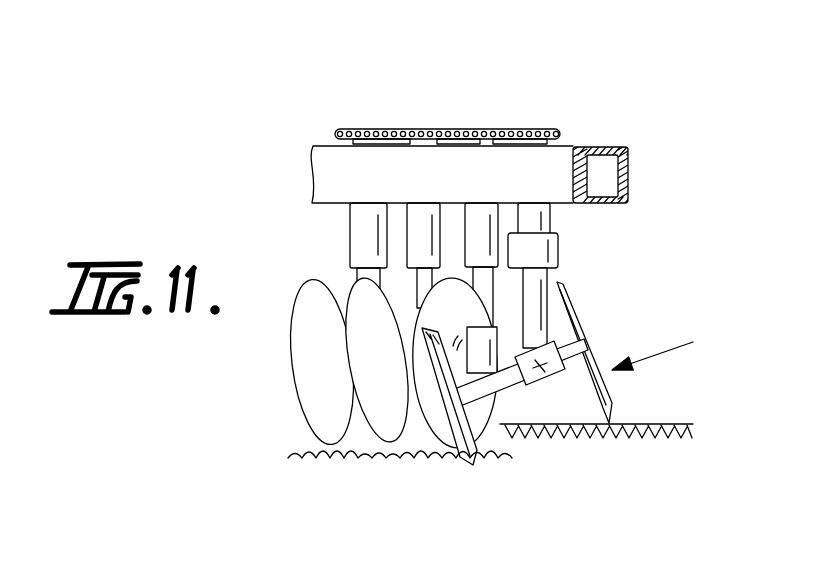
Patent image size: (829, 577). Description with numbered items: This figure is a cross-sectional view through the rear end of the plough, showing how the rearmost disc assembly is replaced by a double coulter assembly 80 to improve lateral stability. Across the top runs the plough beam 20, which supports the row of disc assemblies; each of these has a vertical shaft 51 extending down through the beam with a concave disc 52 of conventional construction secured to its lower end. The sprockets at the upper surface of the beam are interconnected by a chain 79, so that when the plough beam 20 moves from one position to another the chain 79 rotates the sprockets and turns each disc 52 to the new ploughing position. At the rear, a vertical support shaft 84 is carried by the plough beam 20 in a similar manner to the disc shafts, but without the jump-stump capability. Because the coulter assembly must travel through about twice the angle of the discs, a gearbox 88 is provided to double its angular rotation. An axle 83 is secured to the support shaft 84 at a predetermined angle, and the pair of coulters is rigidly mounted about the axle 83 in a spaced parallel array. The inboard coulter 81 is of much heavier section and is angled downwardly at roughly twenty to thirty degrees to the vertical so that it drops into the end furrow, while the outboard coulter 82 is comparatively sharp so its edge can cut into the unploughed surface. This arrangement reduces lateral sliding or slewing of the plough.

The plough beam 20 is at (605, 145).
The chain 79 is at (490, 128).
The vertical shaft 51 is at (340, 233).
The concave disc 52 is at (392, 490).
The gearbox 88 is at (533, 258).
The vertical support shaft 84 is at (533, 322).
The outboard coulter 82 is at (580, 347).
The axle 83 is at (545, 378).
The inboard coulter 81 is at (493, 428).
The double coulter assembly 80 is at (676, 345).